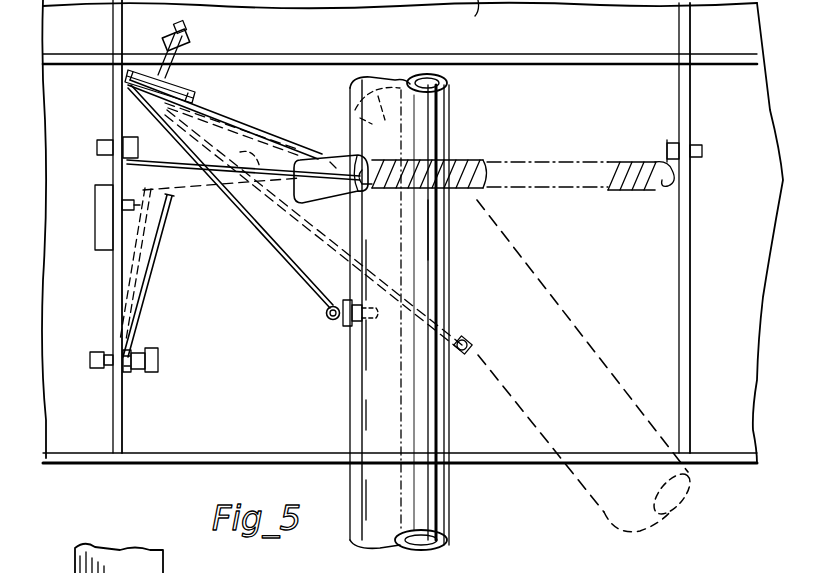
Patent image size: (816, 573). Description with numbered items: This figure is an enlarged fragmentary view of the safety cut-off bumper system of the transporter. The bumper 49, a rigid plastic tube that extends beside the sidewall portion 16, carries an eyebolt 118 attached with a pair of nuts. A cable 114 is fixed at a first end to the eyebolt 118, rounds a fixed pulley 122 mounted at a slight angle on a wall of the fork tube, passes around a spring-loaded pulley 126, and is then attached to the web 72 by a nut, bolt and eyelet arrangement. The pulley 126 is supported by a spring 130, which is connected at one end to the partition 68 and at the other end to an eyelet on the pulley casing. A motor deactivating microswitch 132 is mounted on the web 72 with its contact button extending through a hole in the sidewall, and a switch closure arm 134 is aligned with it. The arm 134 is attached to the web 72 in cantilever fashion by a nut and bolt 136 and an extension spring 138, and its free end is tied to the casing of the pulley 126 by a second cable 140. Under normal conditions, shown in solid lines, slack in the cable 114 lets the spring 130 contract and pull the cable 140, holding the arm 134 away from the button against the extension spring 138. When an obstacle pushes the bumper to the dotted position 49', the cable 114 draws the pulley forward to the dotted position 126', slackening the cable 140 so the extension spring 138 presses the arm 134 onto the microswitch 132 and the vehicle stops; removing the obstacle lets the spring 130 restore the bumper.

The sidewall portion 16 is at (477, 465).
The bumper 49 is at (417, 312).
The bumper in displaced position 49' is at (587, 372).
The partition 68 is at (690, 276).
The web 72 is at (124, 400).
The cable 114 is at (253, 120).
The eyebolt 118 is at (330, 318).
The fixed pulley 122 is at (185, 102).
The spring-supported pulley 126 is at (347, 145).
The pulley in displaced position 126' is at (318, 228).
The spring 130 is at (483, 160).
The motor deactivating microswitch 132 is at (93, 222).
The switch closure arm 134 is at (168, 255).
The nut and bolt 136 is at (160, 360).
The extension spring 138 is at (143, 348).
The second cable 140 is at (215, 200).